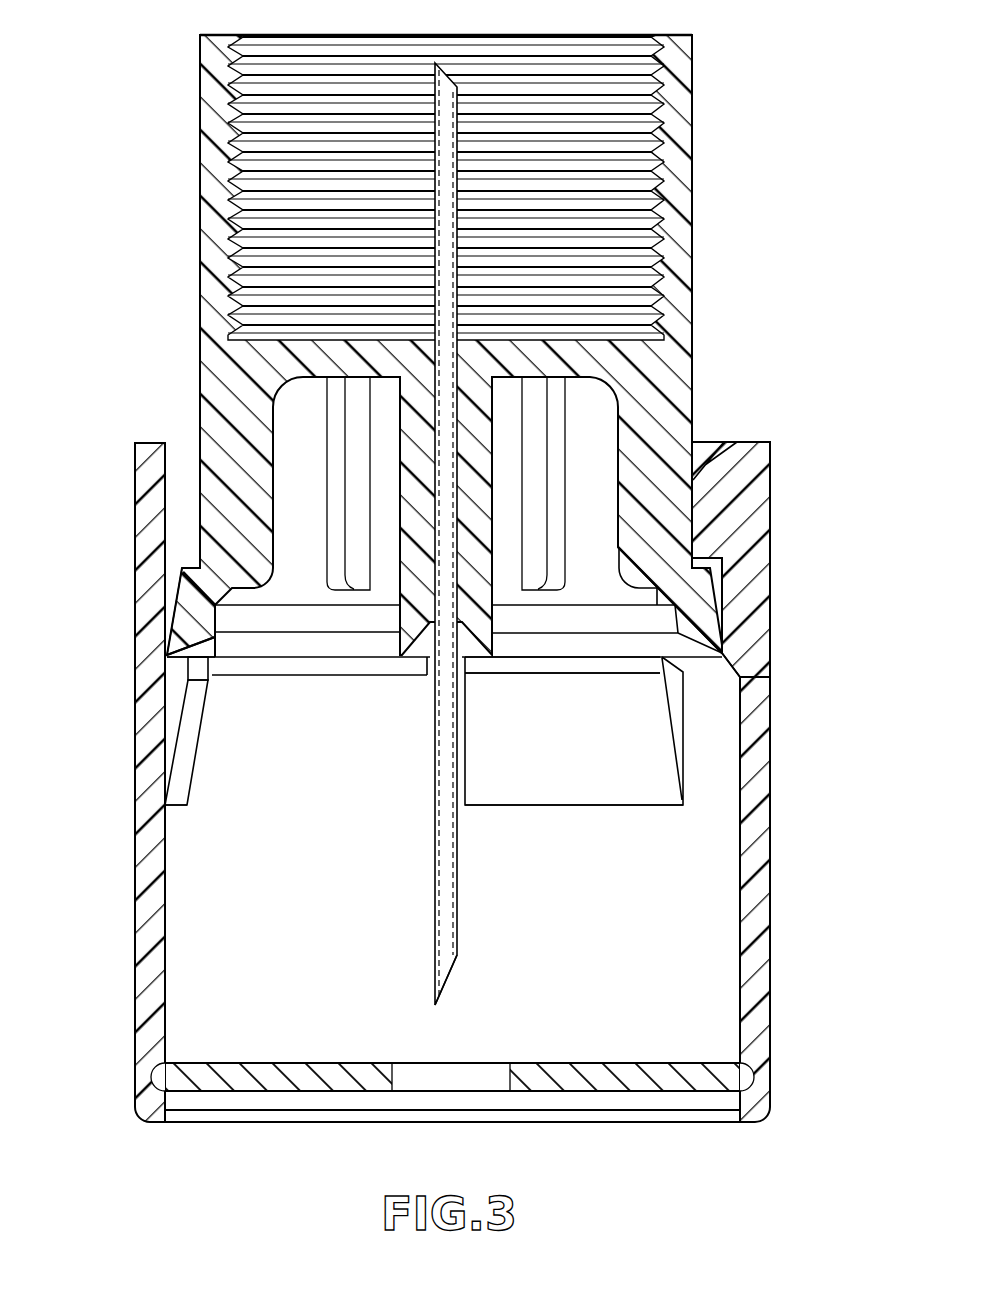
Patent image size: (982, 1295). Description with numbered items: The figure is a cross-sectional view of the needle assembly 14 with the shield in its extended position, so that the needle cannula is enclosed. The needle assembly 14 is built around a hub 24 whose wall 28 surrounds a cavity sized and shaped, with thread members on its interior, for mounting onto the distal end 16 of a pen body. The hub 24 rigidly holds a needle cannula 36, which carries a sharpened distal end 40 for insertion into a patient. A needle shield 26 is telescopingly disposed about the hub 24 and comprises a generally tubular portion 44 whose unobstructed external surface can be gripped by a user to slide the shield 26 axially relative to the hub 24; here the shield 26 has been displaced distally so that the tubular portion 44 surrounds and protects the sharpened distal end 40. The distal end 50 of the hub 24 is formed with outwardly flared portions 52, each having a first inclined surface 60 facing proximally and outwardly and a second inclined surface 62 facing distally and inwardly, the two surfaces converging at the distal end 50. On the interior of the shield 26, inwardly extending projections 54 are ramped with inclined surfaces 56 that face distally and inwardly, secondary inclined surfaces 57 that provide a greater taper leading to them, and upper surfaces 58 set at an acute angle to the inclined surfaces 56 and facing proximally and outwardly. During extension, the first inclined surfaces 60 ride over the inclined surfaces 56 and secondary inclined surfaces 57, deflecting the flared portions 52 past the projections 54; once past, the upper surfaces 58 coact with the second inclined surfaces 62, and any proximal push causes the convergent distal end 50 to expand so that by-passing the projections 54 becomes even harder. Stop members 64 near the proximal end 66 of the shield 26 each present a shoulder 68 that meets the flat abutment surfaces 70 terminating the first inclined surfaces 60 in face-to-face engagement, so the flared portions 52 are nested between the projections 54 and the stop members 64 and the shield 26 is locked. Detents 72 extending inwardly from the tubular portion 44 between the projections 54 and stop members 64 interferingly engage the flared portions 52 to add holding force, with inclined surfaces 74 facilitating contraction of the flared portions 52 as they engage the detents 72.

The needle assembly 14 is at (733, 113).
The distal end 16 is at (694, 424).
The hub 24 is at (694, 212).
The needle shield 26 is at (133, 958).
The wall 28 is at (201, 282).
The needle cannula 36 is at (432, 870).
The sharpened distal end 40 is at (448, 982).
The tubular portion 44 is at (772, 942).
The distal end 50 is at (170, 641).
The flared portions 52 is at (167, 634).
The projections 54 is at (193, 784).
The inclined surfaces 56 is at (207, 676).
The secondary inclined surfaces 57 is at (174, 802).
The upper surfaces 58 is at (187, 669).
The first inclined surface 60 is at (181, 582).
The second inclined surface 62 is at (225, 660).
The stop members 64 is at (762, 491).
The proximal end 66 is at (734, 442).
The shoulder 68 is at (727, 570).
The abutment surfaces 70 is at (192, 535).
The detents 72 is at (740, 640).
The inclined surfaces 74 is at (343, 668).